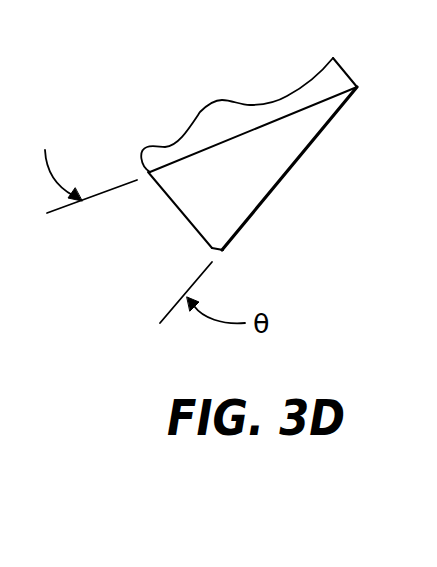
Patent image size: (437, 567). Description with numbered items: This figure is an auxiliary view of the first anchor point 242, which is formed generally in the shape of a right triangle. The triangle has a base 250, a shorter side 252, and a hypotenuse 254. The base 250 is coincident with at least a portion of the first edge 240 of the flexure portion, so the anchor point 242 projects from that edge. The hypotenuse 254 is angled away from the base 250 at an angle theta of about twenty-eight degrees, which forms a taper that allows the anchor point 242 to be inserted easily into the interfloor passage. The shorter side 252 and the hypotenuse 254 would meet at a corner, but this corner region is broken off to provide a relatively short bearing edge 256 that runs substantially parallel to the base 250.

The first edge 240 is at (250, 130).
The first anchor point 242 is at (290, 167).
The base 250 is at (187, 157).
The shorter side 252 is at (178, 210).
The hypotenuse 254 is at (330, 120).
The bearing edge 256 is at (223, 250).